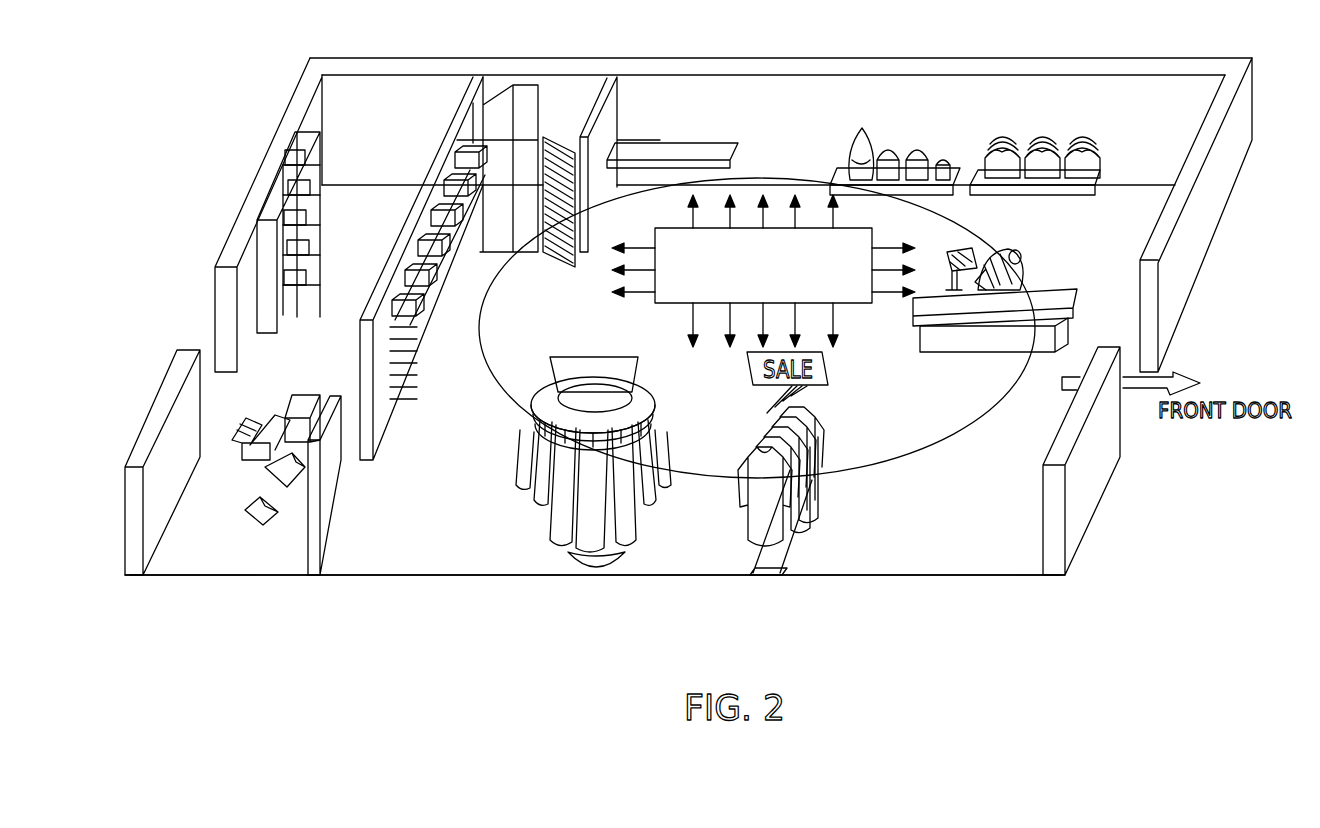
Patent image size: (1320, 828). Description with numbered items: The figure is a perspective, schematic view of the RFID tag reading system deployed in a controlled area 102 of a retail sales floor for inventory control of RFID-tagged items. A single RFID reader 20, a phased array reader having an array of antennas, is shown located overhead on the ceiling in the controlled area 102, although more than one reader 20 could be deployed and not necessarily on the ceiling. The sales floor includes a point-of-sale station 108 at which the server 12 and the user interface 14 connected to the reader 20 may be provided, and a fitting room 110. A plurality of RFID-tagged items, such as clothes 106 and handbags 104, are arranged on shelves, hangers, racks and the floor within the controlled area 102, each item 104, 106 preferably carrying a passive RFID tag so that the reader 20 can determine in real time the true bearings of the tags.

The fitting room 110 is at (561, 84).
The handbags 104 is at (960, 128).
The server 12 is at (969, 246).
The user interface 14 is at (956, 262).
The point-of-sale station 108 is at (1046, 272).
The RFID reader 20 is at (677, 323).
The clothes 106 is at (504, 540).
The controlled area 102 is at (951, 572).